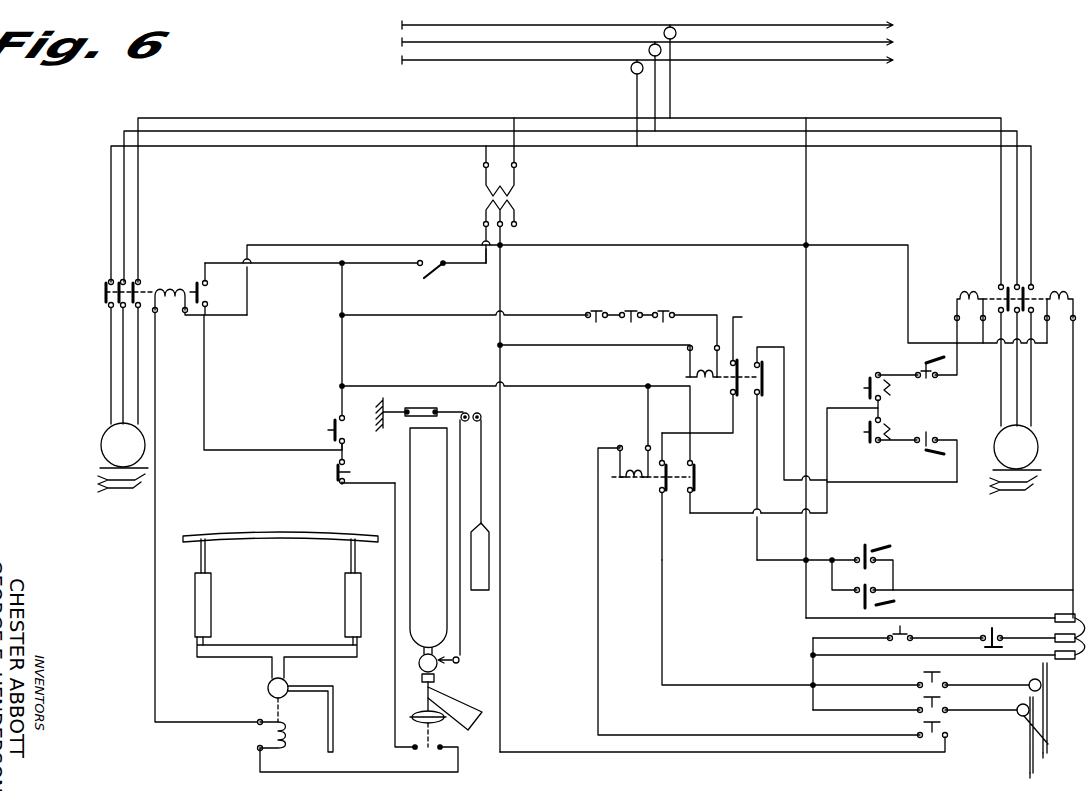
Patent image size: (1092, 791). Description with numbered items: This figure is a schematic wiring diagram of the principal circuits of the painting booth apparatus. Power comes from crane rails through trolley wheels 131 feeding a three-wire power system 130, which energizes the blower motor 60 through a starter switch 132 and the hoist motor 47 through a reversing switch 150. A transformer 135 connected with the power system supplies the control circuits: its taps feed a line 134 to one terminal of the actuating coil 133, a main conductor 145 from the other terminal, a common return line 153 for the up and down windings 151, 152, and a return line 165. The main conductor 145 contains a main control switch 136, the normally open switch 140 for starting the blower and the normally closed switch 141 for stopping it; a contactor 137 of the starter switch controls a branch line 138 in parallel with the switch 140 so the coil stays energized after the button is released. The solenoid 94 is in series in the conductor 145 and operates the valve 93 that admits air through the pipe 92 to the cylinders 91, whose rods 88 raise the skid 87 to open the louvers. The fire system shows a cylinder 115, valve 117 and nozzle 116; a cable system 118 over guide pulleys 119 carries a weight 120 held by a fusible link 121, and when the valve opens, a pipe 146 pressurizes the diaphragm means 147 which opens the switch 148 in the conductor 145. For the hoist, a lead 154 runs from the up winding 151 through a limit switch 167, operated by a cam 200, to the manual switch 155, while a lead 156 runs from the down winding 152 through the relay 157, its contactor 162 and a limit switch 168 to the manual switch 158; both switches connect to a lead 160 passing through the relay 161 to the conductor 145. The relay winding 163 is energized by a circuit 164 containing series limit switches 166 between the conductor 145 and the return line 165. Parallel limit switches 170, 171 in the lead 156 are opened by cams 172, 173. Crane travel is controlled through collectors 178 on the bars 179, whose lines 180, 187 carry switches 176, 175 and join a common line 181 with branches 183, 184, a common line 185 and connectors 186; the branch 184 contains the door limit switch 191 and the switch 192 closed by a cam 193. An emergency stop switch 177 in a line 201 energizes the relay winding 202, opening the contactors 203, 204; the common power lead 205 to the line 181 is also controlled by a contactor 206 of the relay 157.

The trolley wheels 131 is at (677, 30).
The three-wire power system 130 is at (455, 146).
The transformer 135 is at (514, 218).
The return line 165 is at (502, 282).
The line 134 is at (290, 245).
The common return line 153 is at (693, 245).
The starter switch 132 is at (172, 274).
The actuating coil 133 is at (182, 314).
The contactor 137 is at (222, 302).
The main control switch 136 is at (426, 272).
The branch line 138 is at (204, 392).
The normally open switch 140 is at (334, 424).
The normally closed switch 141 is at (336, 473).
The main conductor 145 is at (343, 342).
The limit switches 166 is at (658, 312).
The relay energizing circuit 164 is at (510, 343).
The relay actuating winding 163 is at (712, 380).
The lead 160 is at (576, 386).
The contactor 206 is at (740, 345).
The relay 157 is at (768, 356).
The contactor 162 is at (764, 390).
The relay 161 is at (712, 463).
The second contactor 204 is at (666, 500).
The common power lead 205 is at (664, 585).
The contactor 203 is at (694, 482).
The relay winding 202 is at (634, 484).
The fusible link 121 is at (424, 406).
The guide pulleys 119 is at (482, 418).
The cable system 118 is at (484, 486).
The weight 120 is at (490, 551).
The cylinder 115 is at (448, 612).
The valve 117 is at (440, 668).
The discharge nozzle 116 is at (474, 700).
The diaphragm means 147 is at (442, 723).
The fluid pipe 146 is at (394, 702).
The normally closed switch 148 is at (414, 750).
The skid 87 is at (270, 533).
The cylinders 91 is at (212, 604).
The rods 88 is at (350, 552).
The pipe 92 is at (232, 657).
The solenoid actuated valve 93 is at (268, 692).
The solenoid 94 is at (258, 736).
The blower motor 60 is at (100, 447).
The hoist motor 47 is at (1030, 434).
The reversing switch 150 is at (994, 273).
The up winding 151 is at (957, 291).
The down winding 152 is at (1047, 291).
The lead 154 is at (959, 378).
The cam 200 is at (935, 355).
The limit switch 167 is at (919, 379).
The manual up switch 155 is at (870, 386).
The manual down switch 158 is at (870, 445).
The limit switch 168 is at (916, 455).
The lead 156 is at (1072, 482).
The line 201 is at (530, 752).
The limit switch 171 is at (855, 554).
The cam 173 is at (880, 547).
The limit switch 170 is at (858, 593).
The cam 172 is at (870, 604).
The cam 193 is at (939, 591).
The common line 181 is at (812, 662).
The limit switch 191 is at (888, 640).
The branch line 184 is at (985, 642).
The switch 192 is at (995, 630).
The common line 185 is at (1056, 618).
The connectors 186 is at (1068, 628).
The branch line 183 is at (968, 657).
The switch 175 is at (918, 681).
The bars 179 is at (1060, 697).
The switch 176 is at (918, 707).
The reverse line 180 is at (1017, 714).
The forward line 187 is at (1017, 684).
The collectors 178 is at (1040, 726).
The emergency stop switch 177 is at (918, 733).